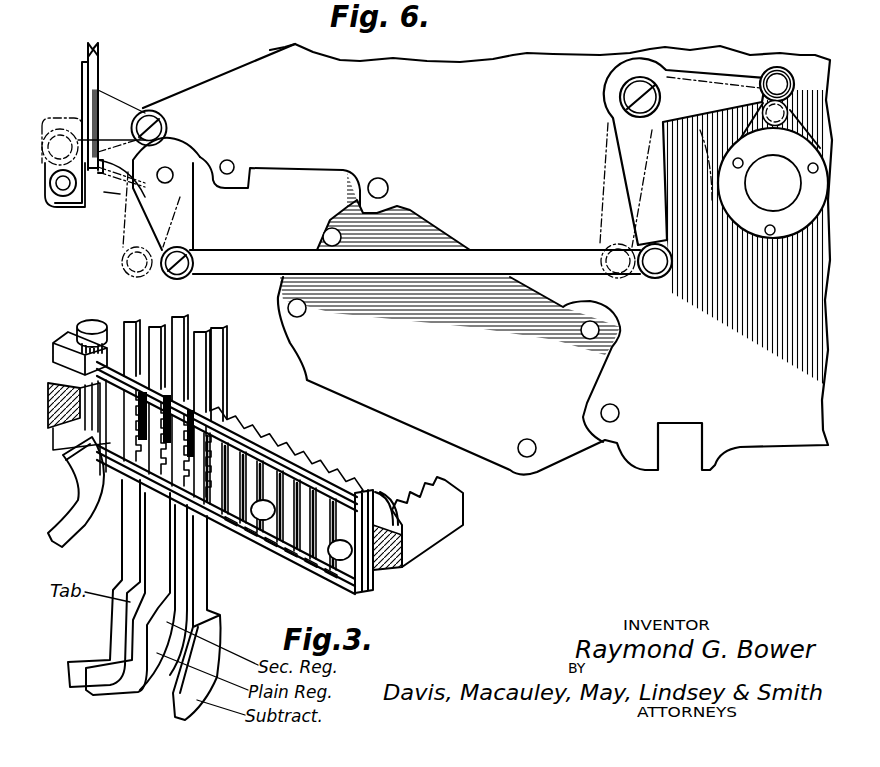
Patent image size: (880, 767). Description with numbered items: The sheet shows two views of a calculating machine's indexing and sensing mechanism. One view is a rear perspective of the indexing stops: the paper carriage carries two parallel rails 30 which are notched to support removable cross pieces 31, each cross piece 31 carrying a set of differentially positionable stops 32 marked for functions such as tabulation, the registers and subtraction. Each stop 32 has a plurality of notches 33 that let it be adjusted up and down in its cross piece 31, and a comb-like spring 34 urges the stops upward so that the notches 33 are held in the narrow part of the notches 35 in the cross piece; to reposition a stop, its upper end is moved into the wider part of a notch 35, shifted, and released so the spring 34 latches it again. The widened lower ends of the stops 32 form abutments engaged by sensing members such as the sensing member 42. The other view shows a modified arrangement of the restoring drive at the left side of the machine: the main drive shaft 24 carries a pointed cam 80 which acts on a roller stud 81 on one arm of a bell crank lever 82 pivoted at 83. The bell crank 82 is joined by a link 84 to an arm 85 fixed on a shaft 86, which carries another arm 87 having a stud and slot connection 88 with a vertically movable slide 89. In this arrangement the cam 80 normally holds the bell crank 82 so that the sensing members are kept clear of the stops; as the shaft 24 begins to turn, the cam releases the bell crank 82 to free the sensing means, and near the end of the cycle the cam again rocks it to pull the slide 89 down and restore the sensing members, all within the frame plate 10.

In FIG. 6, the frame plate 10 is at (519, 58).
In FIG. 6, the main drive shaft 24 is at (773, 170).
In FIG. 6, the pointed cam 80 is at (770, 232).
In FIG. 6, the roller stud 81 is at (777, 86).
In FIG. 6, the bell crank lever 82 is at (695, 88).
In FIG. 6, the pivot 83 is at (640, 95).
In FIG. 6, the link 84 is at (283, 250).
In FIG. 6, the arm 85 is at (183, 216).
In FIG. 6, the shaft 86 is at (167, 174).
In FIG. 6, the arm 87 is at (113, 188).
In FIG. 6, the stud and slot connection 88 is at (63, 190).
In FIG. 6, the vertically movable slide 89 is at (85, 98).
In FIG. 3, the parallel rails 30 is at (222, 329).
In FIG. 3, the removable cross piece 31 is at (378, 568).
In FIG. 3, the differentially positionable stop 32 is at (202, 371).
In FIG. 3, the notches 33 is at (188, 378).
In FIG. 3, the comb-like spring 34 is at (323, 515).
In FIG. 3, the notches 35 is at (249, 434).
In FIG. 3, the sensing member 42 is at (183, 592).